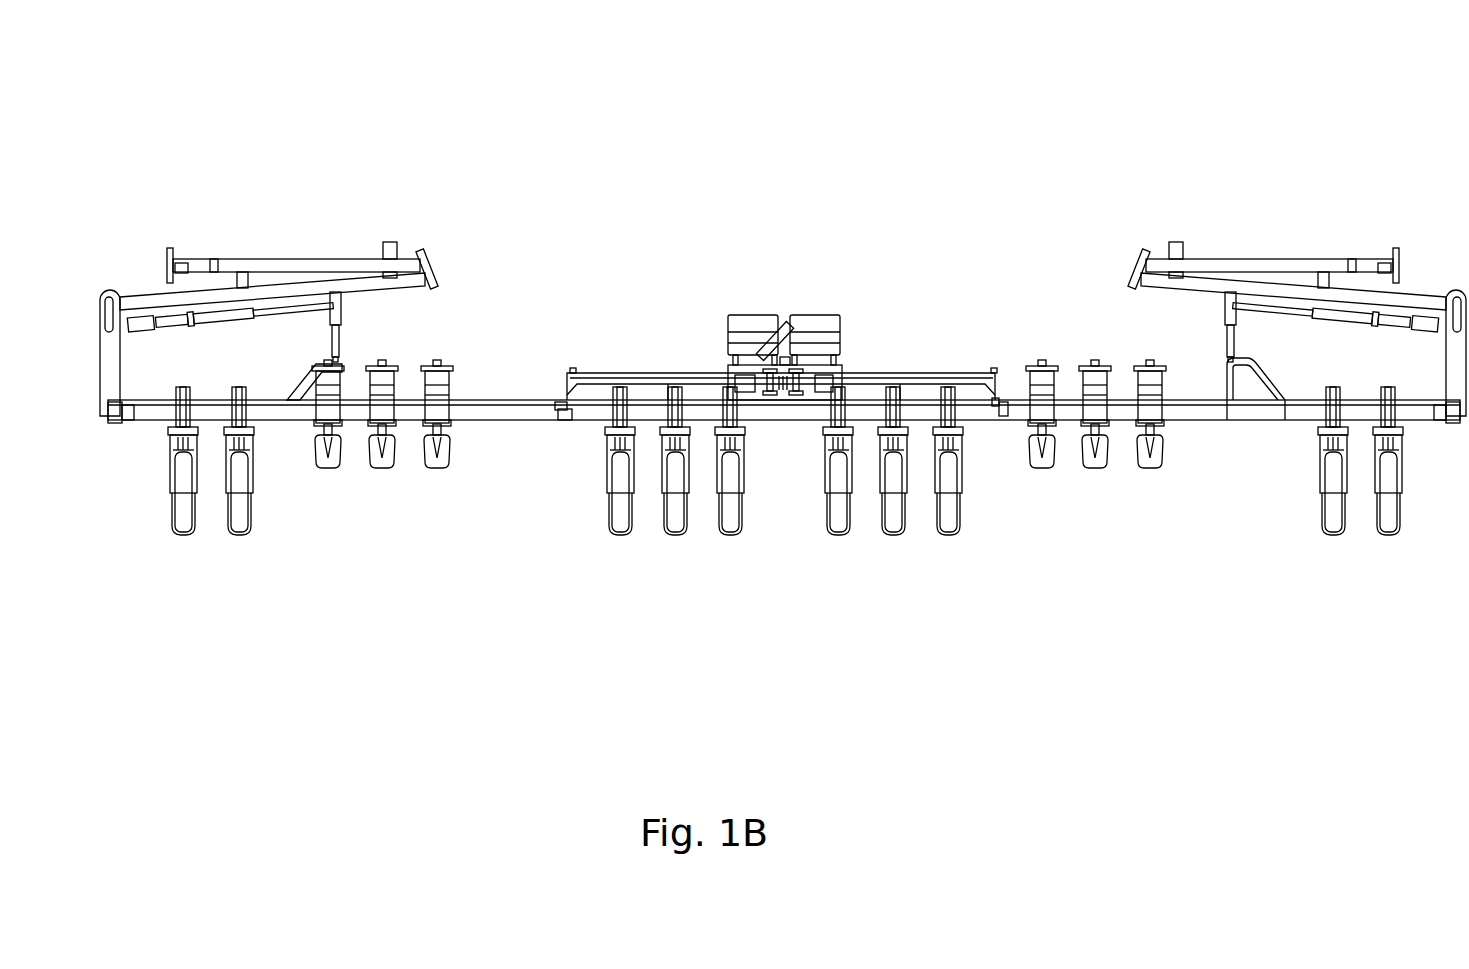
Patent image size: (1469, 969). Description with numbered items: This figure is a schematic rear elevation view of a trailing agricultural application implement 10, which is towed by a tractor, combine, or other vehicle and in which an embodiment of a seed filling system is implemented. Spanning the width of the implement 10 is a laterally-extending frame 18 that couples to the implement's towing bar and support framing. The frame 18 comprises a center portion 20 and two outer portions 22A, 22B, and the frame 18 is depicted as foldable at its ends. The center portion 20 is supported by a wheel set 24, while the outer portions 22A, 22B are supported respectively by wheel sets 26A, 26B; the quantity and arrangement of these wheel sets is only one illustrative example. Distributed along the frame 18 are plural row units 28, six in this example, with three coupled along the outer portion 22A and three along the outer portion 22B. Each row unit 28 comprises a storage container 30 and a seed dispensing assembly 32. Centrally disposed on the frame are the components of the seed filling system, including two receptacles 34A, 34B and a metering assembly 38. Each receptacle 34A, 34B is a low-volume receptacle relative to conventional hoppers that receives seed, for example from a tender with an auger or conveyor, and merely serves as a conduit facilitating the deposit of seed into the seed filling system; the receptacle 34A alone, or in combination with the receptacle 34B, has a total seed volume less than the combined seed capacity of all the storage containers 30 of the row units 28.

The trailing agricultural application implement 10 is at (180, 222).
The laterally-extending frame 18 is at (530, 400).
The center portion 20 is at (795, 478).
The outer portion 22A is at (375, 568).
The outer portion 22B is at (1119, 498).
The wheel set 24 is at (697, 566).
The wheel set 26A is at (210, 550).
The wheel set 26B is at (1360, 545).
The row unit 28 is at (1088, 338).
The storage container 30 is at (1037, 375).
The seed dispensing assembly 32 is at (1035, 413).
The receptacle 34A is at (745, 315).
The receptacle 34B is at (823, 315).
The metering assembly 38 is at (780, 397).